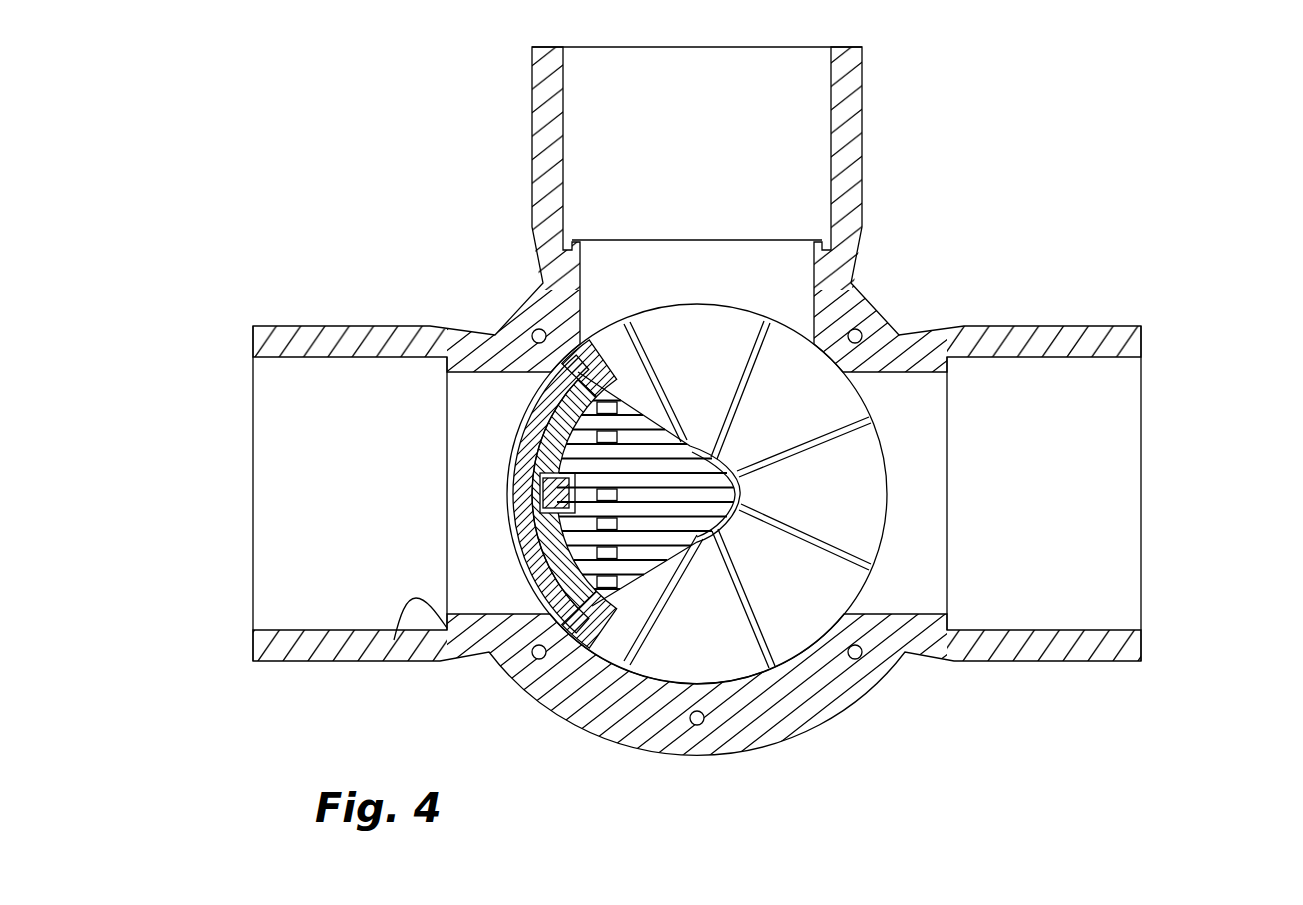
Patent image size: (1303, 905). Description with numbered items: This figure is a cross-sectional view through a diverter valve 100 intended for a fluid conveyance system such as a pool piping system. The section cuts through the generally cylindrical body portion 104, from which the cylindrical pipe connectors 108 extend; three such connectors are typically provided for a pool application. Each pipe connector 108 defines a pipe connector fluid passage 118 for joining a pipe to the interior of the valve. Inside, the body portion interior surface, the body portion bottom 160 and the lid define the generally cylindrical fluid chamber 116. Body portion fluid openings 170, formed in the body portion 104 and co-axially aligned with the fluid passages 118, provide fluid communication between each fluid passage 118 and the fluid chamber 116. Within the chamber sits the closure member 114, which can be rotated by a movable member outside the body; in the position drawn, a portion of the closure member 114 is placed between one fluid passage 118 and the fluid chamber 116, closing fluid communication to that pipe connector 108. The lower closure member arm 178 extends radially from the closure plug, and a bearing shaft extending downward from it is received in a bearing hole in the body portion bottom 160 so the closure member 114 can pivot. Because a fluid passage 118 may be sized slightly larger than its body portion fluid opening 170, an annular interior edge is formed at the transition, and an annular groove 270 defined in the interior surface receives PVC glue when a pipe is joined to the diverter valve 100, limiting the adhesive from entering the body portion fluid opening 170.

The diverter valve 100 is at (972, 188).
The body portion 104 is at (872, 690).
The pipe connector 108 is at (356, 325).
The closure member 114 is at (540, 400).
The fluid chamber 116 is at (792, 618).
The pipe connector fluid passage 118 is at (322, 543).
The body portion bottom 160 is at (826, 411).
The body portion fluid opening 170 is at (922, 425).
The lower closure member arm 178 is at (623, 578).
The annular groove 270 is at (394, 640).